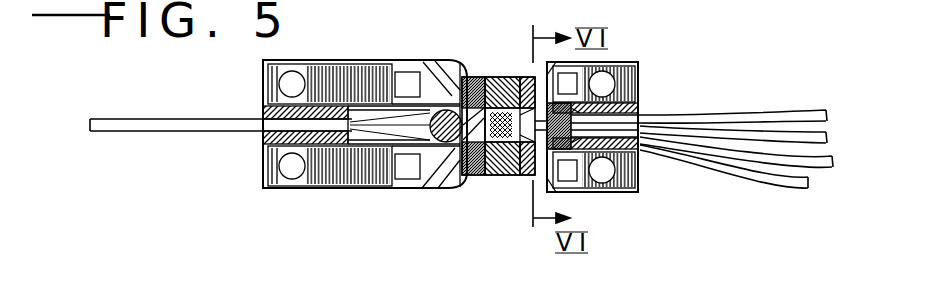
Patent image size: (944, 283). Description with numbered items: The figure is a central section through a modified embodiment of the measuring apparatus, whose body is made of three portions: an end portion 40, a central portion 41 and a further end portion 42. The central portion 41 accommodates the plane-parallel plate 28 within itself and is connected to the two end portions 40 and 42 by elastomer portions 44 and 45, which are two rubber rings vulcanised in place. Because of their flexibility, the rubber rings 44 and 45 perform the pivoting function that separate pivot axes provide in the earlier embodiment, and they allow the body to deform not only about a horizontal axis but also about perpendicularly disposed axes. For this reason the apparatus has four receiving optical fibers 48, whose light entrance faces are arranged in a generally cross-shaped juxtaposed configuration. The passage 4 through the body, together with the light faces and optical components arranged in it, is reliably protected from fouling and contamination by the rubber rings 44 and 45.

The passage 4 is at (342, 188).
The plane-parallel plate 28 is at (428, 189).
The end portion 40 is at (384, 40).
The central portion 41 is at (503, 180).
The end portion 42 is at (607, 63).
The elastomer portion 44 is at (482, 72).
The elastomer portion 45 is at (577, 192).
The receiving optical fibers 48 is at (783, 118).